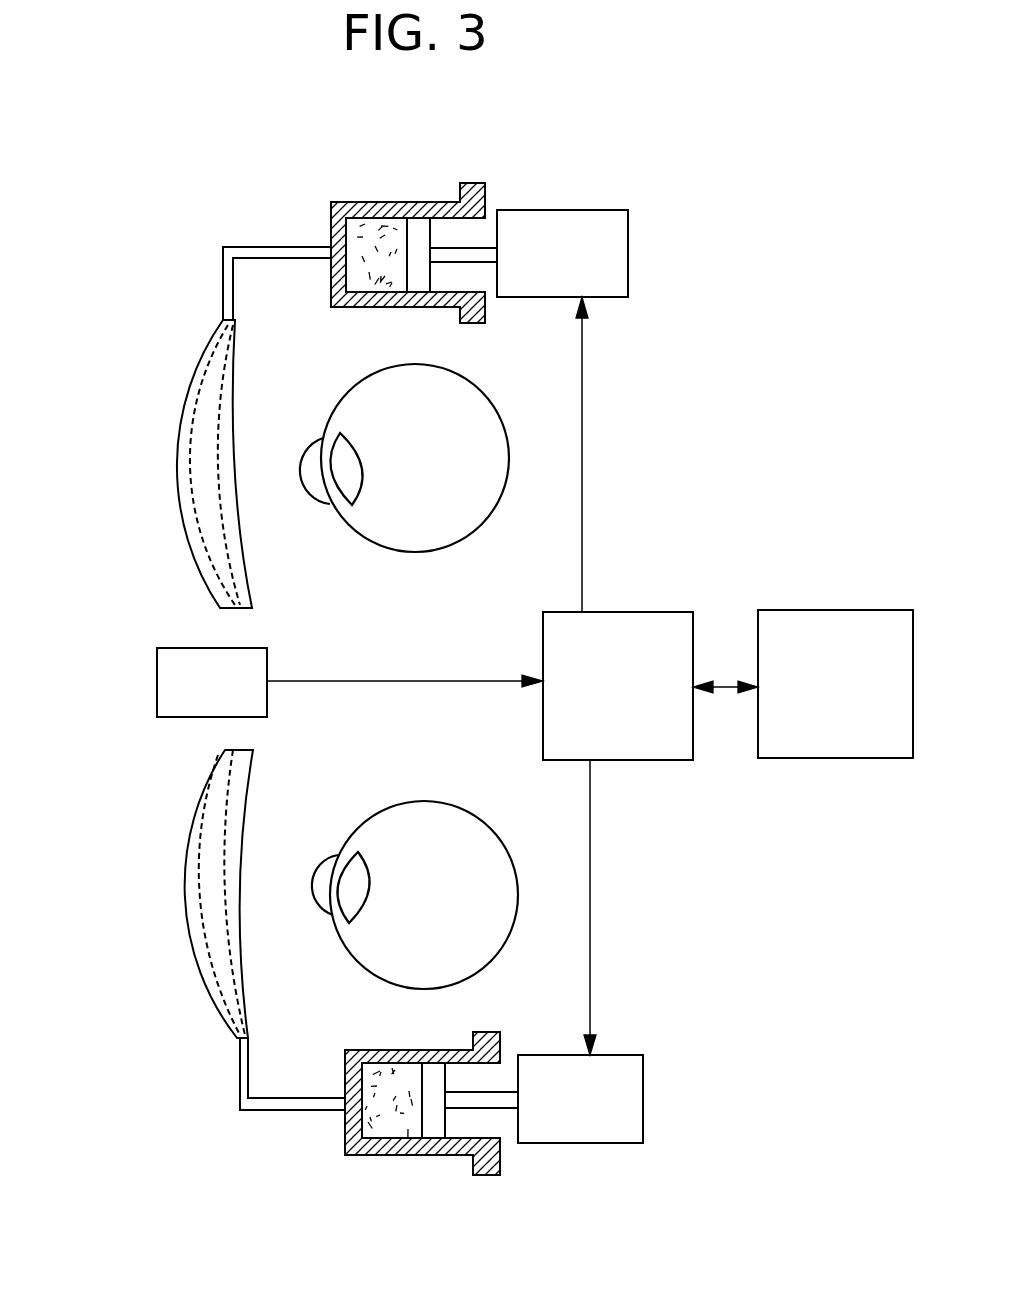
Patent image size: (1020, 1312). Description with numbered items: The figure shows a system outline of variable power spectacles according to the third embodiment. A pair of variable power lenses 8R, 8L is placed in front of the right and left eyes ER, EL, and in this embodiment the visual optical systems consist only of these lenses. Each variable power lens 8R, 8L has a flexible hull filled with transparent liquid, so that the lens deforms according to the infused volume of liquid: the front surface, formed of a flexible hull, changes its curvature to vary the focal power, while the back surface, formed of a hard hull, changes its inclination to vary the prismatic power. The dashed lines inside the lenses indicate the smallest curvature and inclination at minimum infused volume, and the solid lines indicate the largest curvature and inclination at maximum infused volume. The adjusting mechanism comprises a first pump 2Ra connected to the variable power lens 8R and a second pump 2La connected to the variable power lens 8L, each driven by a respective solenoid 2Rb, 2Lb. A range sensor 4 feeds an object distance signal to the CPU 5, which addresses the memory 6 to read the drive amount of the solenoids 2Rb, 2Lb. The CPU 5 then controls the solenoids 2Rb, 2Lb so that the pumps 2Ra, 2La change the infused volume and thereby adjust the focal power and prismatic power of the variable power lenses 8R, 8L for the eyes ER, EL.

The first pump 2Ra is at (331, 210).
The solenoid 2Rb is at (561, 218).
The variable power lens 8R is at (178, 450).
The right eye ER is at (450, 528).
The range sensor 4 is at (267, 657).
The CPU 5 is at (543, 640).
The memory 6 is at (815, 758).
The left eye EL is at (474, 818).
The variable power lens 8L is at (185, 878).
The second pump 2La is at (345, 1136).
The solenoid 2Lb is at (583, 1143).